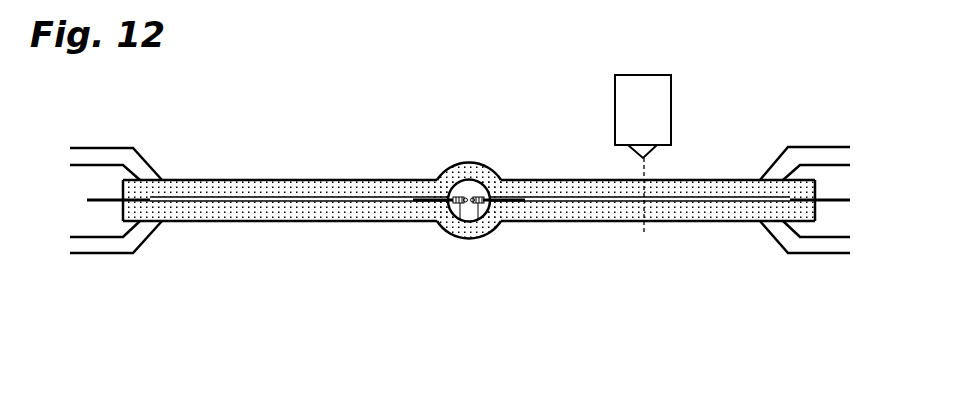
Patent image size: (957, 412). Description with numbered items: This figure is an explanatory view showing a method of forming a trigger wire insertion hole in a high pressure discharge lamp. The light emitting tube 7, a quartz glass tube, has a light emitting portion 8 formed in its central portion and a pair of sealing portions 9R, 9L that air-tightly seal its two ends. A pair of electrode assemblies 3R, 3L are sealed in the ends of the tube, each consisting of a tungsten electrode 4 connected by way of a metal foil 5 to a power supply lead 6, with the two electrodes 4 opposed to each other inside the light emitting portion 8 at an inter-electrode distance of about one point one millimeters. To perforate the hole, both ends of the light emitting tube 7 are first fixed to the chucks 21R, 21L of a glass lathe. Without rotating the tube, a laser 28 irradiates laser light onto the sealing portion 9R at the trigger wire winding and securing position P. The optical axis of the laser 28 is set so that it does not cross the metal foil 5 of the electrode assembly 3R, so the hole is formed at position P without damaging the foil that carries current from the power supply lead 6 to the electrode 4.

The electrode assembly 3L is at (405, 319).
The electrode assembly 3R is at (744, 313).
The tungsten electrode 4 is at (537, 297).
The metal foil 5 is at (608, 290).
The power supply lead 6 is at (743, 298).
The light emitting tube 7 is at (562, 73).
The light emitting portion 8 is at (462, 173).
The sealing portion 9L is at (326, 180).
The sealing portion 9R is at (592, 185).
The chuck 21L is at (131, 162).
The chuck 21R is at (810, 155).
The laser 28 is at (644, 92).
The trigger wire winding and securing position P is at (641, 207).